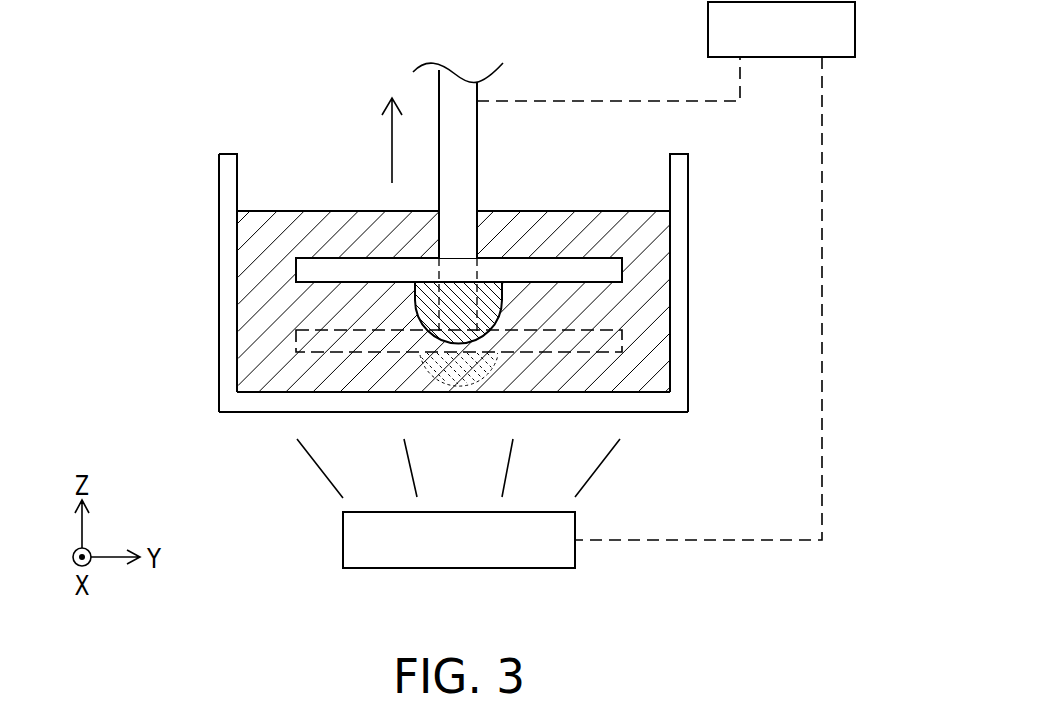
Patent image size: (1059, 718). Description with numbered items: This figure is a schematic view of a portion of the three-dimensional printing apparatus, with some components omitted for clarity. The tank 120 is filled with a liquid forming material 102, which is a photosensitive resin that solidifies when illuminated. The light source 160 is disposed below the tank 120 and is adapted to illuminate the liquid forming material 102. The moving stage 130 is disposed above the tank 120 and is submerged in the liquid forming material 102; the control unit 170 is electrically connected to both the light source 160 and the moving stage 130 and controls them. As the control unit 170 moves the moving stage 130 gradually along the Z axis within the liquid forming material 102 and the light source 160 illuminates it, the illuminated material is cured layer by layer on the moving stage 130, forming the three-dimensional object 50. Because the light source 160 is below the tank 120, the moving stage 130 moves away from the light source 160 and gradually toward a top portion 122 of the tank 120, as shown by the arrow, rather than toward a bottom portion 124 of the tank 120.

The 3-D object 50 is at (492, 302).
The liquid forming material 102 is at (285, 224).
The tank 120 is at (401, 305).
The top portion 122 is at (212, 153).
The bottom portion 124 is at (218, 413).
The moving stage 130 is at (471, 170).
The light source 160 is at (575, 556).
The control unit 170 is at (708, 27).